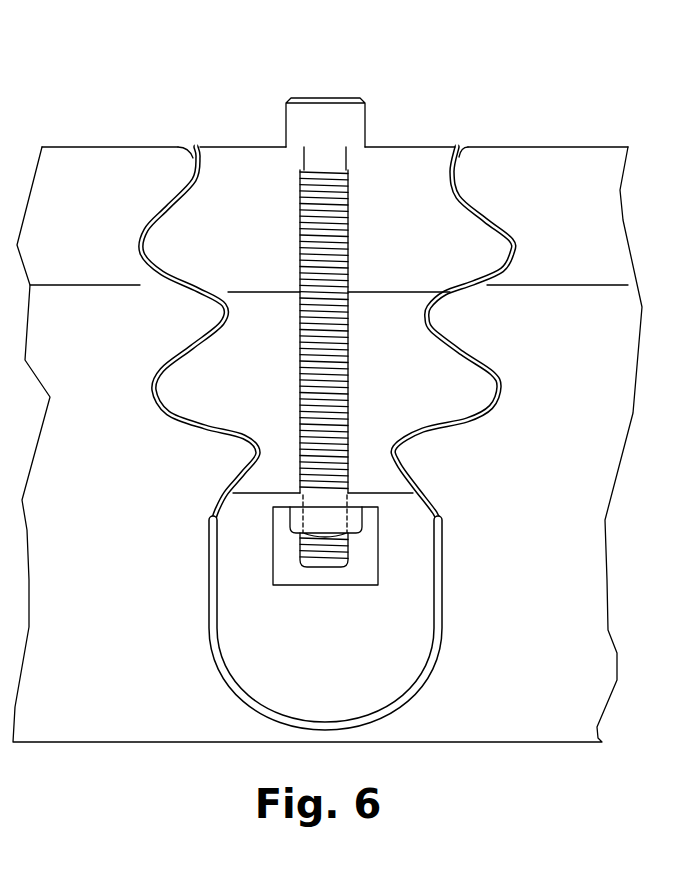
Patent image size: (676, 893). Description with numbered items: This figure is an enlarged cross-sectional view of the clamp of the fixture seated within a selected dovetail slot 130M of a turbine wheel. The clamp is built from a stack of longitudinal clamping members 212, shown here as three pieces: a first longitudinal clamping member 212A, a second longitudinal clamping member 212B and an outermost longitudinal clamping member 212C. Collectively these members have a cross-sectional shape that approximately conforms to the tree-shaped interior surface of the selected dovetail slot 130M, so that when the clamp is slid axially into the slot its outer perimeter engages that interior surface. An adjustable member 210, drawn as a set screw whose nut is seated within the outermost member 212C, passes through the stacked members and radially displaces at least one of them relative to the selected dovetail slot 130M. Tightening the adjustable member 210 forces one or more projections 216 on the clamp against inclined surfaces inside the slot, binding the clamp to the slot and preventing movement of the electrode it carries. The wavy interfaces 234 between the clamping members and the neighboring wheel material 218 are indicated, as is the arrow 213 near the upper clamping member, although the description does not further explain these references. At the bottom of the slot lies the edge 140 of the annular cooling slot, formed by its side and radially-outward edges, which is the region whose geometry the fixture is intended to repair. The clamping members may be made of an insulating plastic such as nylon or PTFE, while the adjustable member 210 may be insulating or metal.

The adjustable member 210 is at (316, 115).
The direction arrow 213 is at (268, 183).
The projection 216 is at (172, 240).
The longitudinal clamping members 212 is at (174, 402).
The first longitudinal clamping member 212A is at (375, 247).
The second longitudinal clamping member 212B is at (373, 399).
The outermost longitudinal clamping member 212C is at (322, 637).
The wavy joint 234 is at (493, 241).
The adjacent panel 218 is at (563, 259).
The selected dovetail slot 130M is at (430, 308).
The edge of cooling slot 140 is at (443, 520).